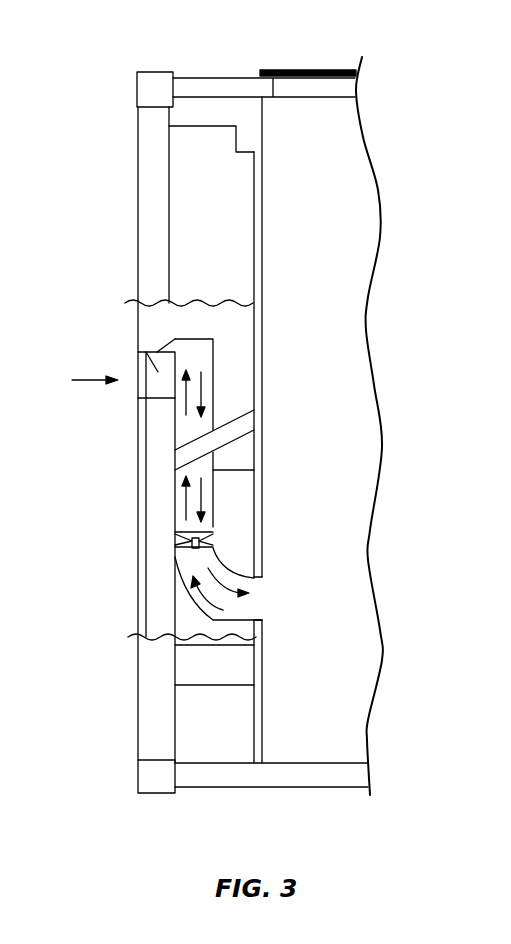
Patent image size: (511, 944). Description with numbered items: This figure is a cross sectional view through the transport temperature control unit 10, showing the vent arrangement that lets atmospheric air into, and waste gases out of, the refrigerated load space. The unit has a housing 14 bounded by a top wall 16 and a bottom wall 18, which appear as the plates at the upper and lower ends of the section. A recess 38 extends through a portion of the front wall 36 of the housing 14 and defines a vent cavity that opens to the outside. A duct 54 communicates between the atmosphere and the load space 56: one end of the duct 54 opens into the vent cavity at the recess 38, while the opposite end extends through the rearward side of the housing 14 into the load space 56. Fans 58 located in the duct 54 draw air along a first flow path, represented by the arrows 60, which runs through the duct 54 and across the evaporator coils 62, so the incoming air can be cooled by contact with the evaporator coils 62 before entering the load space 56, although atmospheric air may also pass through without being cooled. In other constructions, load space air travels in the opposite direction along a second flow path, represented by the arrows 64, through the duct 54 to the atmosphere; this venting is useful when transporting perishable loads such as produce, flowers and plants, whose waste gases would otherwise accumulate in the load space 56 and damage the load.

The temperature control unit 10 is at (330, 140).
The housing 14 is at (146, 593).
The top wall 16 is at (210, 77).
The bottom wall 18 is at (207, 787).
The front wall 36 is at (139, 447).
The recess 38 is at (140, 398).
The duct 54 is at (217, 505).
The load space 56 is at (350, 637).
The fans 58 is at (175, 532).
The arrows representing first flow path 60 is at (200, 497).
The evaporator coils 62 is at (237, 430).
The arrows representing second flow path 64 is at (207, 597).